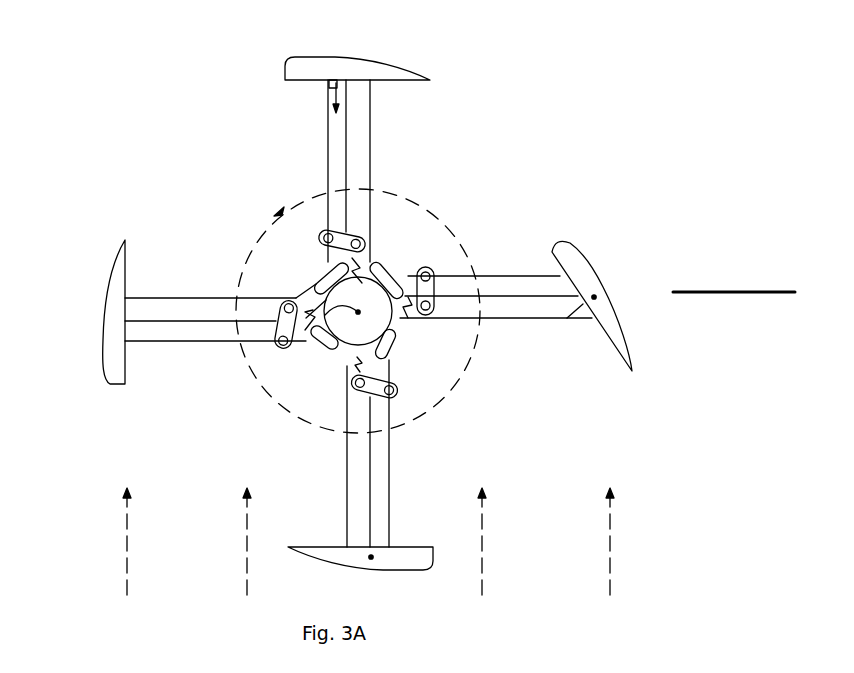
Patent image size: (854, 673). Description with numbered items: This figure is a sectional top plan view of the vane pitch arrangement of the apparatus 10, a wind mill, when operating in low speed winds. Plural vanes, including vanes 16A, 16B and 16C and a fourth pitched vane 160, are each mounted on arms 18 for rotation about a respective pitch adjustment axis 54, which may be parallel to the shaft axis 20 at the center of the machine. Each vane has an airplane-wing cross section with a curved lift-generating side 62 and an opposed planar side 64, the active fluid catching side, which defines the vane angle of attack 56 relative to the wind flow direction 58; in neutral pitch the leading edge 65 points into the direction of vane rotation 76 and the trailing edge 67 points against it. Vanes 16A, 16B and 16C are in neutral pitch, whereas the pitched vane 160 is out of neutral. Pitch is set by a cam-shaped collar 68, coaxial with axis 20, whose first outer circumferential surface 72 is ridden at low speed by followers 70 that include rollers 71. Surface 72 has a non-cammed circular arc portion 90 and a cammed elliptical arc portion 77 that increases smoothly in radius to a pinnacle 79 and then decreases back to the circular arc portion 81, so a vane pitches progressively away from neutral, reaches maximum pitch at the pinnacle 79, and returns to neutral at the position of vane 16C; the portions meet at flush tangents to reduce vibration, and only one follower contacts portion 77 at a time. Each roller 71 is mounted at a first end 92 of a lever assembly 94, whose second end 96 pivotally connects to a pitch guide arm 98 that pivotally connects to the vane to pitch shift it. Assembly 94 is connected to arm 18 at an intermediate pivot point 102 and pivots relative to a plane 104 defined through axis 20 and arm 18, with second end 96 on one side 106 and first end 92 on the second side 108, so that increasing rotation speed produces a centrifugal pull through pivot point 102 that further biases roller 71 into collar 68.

The apparatus 10 is at (212, 133).
The vane 16A is at (405, 557).
The vane 16B is at (104, 330).
The vane 16C is at (396, 70).
The pivoted blade 160 is at (580, 268).
The arm 18 is at (362, 164).
The shaft axis 20 is at (300, 322).
The pitch adjustment axis 54 is at (597, 297).
The vane angle of attack 56 is at (330, 96).
The wind flow direction 58 is at (483, 545).
The curved lift-generating side 62 is at (323, 58).
The opposed side 64 is at (310, 80).
The leading edge 65 is at (283, 69).
The trailing edge 67 is at (432, 81).
The collar 68 is at (443, 251).
The first outer circumferential surface 72 is at (387, 261).
The follower 70 is at (410, 392).
The roller 71 is at (340, 352).
The direction of vane rotation 76 is at (406, 194).
The cammed arc portion 77 is at (345, 352).
The pinnacle 79 is at (405, 347).
The circular arc portion 81 is at (335, 278).
The non-cammed arc portion 90 is at (337, 280).
The first end 92 is at (387, 377).
The lever assembly 94 is at (428, 327).
The second end 96 is at (427, 264).
The pitch guide arm 98 is at (507, 340).
The intermediate pivot point 102 is at (440, 311).
The plane 104 is at (717, 293).
The one side of the plane 106 is at (707, 268).
The second side of the plane 108 is at (700, 315).